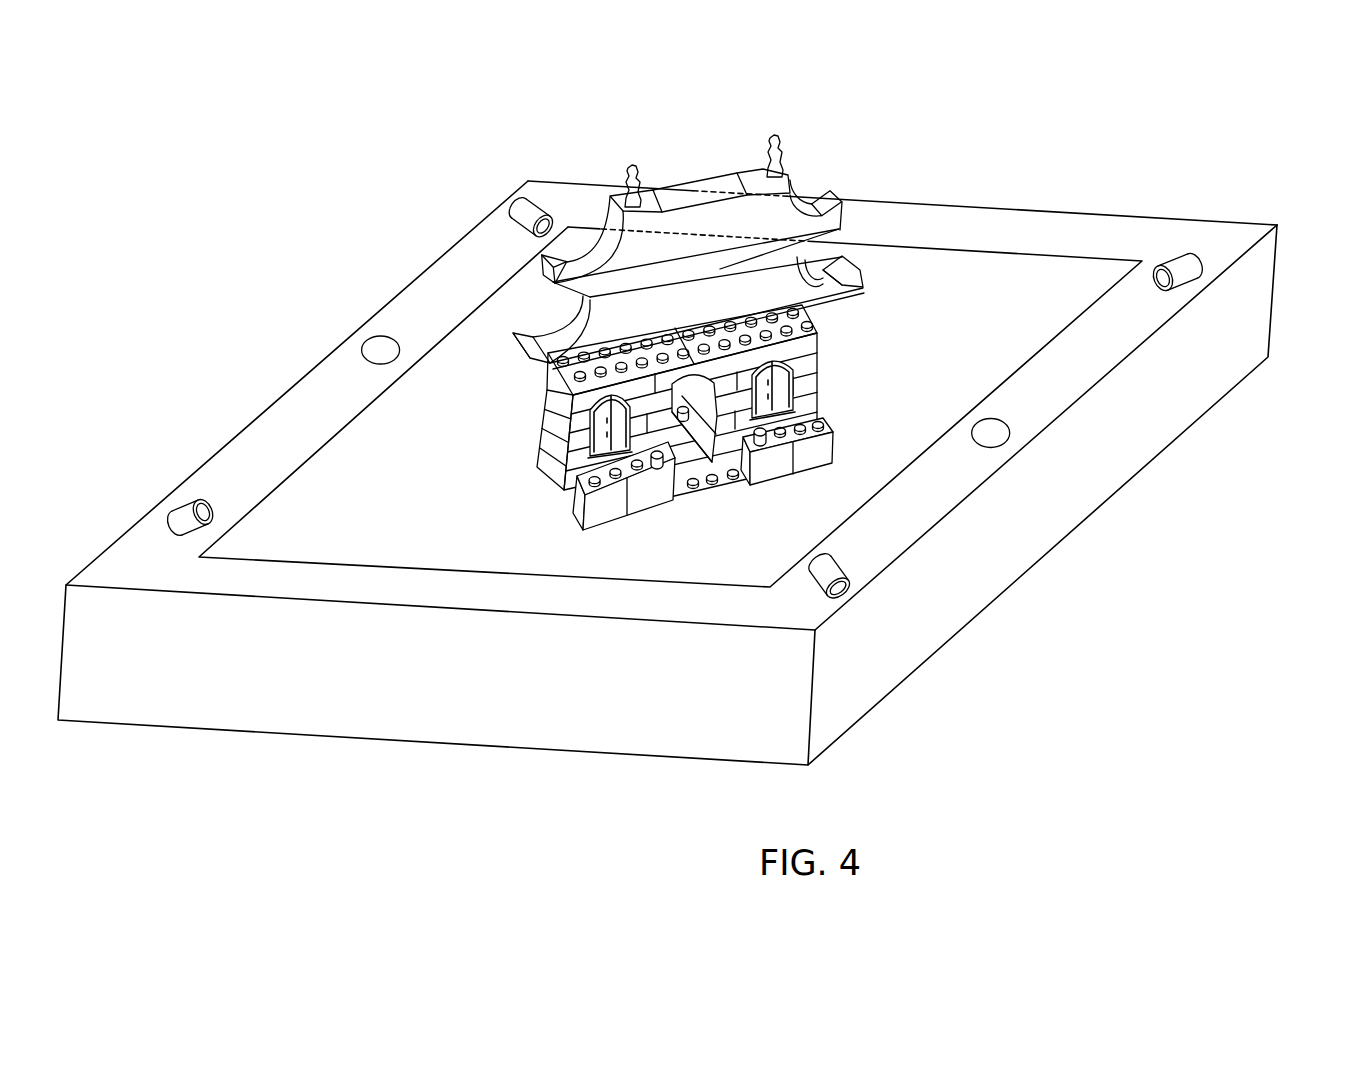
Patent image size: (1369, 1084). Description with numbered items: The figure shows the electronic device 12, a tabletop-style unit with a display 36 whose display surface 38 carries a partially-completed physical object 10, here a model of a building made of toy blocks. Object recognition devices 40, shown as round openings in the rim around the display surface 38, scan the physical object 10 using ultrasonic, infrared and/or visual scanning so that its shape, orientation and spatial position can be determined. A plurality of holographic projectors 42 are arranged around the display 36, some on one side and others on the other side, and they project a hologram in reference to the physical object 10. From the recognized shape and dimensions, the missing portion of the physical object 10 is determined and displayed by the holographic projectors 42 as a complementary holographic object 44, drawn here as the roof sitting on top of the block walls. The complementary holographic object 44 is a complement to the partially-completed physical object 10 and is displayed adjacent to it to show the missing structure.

The physical object 10 is at (818, 385).
The electronic device 12 is at (276, 197).
The display 36 is at (1001, 303).
The display surface 38 is at (895, 268).
The object recognition devices 40 is at (368, 338).
The holographic projectors 42 is at (516, 198).
The complementary holographic object 44 is at (747, 170).